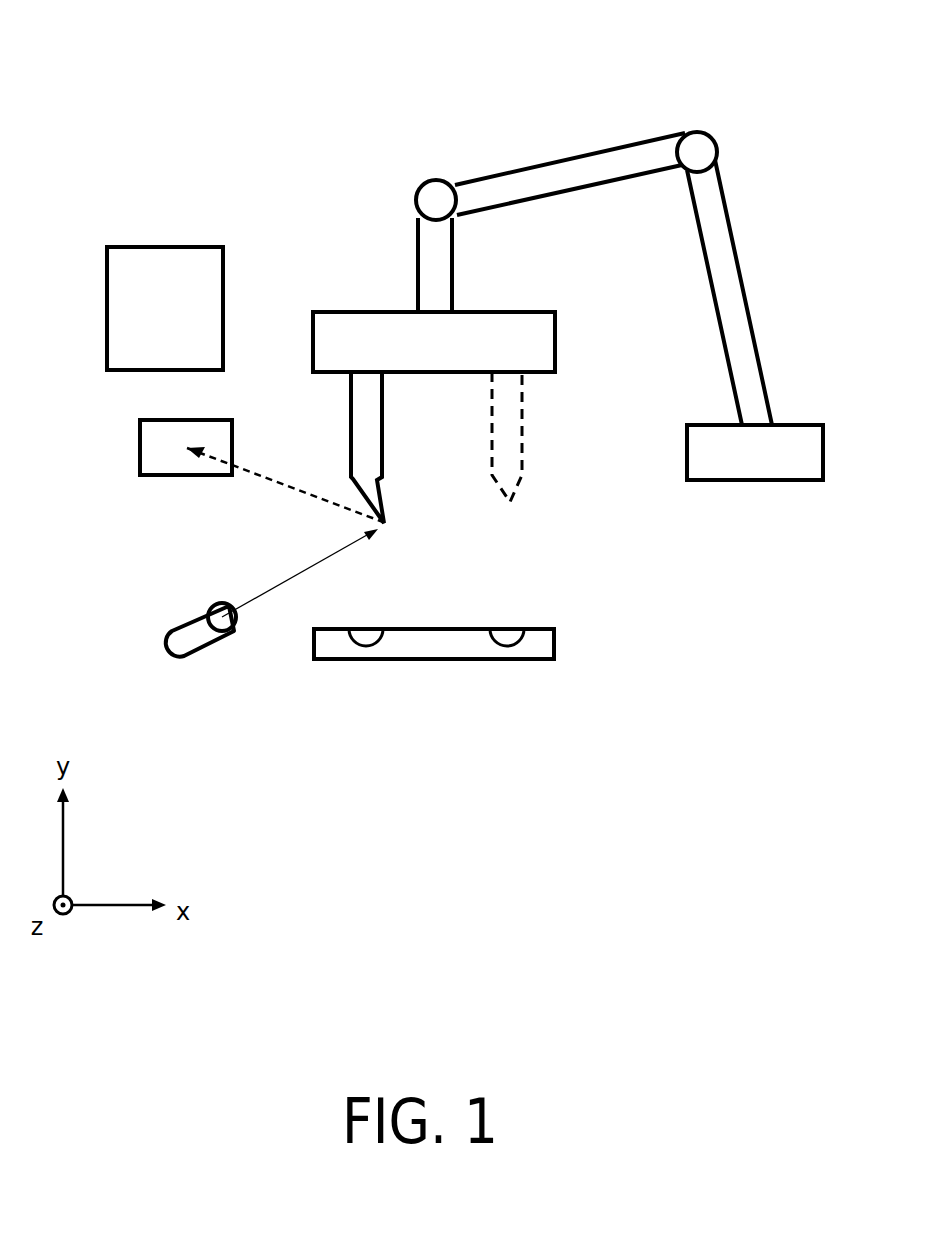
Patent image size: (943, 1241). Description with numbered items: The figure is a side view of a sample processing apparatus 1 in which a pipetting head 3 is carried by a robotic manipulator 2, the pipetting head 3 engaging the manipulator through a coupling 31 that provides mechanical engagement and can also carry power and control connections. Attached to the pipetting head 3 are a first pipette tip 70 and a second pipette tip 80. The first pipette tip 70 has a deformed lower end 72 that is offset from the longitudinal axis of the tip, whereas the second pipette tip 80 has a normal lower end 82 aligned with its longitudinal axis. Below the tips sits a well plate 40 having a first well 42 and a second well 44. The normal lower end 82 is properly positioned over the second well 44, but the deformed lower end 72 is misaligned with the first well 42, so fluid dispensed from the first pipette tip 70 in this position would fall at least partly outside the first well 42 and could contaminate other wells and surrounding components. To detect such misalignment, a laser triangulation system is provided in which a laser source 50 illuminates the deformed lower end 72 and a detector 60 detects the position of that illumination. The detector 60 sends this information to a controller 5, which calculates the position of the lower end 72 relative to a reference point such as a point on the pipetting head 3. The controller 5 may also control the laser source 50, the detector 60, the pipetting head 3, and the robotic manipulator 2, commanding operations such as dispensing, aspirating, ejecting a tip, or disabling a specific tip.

The sample processing apparatus 1 is at (246, 92).
The robotic manipulator 2 is at (723, 233).
The pipetting head 3 is at (500, 322).
The controller 5 is at (165, 267).
The coupling 31 is at (437, 275).
The well plate 40 is at (547, 643).
The first well 42 is at (367, 643).
The second well 44 is at (508, 643).
The laser source 50 is at (185, 630).
The detector 60 is at (155, 452).
The first pipette tip 70 is at (367, 435).
The deformed lower end 72 is at (392, 526).
The second pipette tip 80 is at (508, 417).
The normal lower end 82 is at (518, 505).